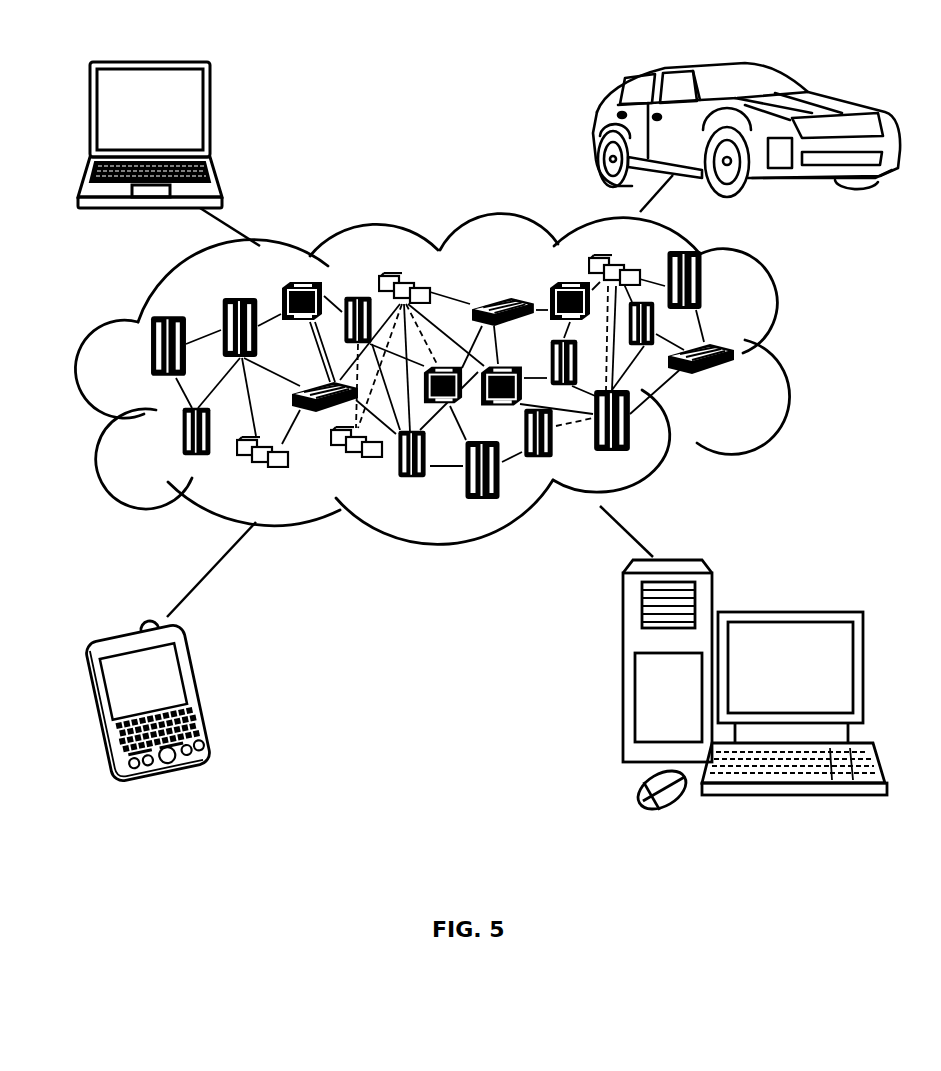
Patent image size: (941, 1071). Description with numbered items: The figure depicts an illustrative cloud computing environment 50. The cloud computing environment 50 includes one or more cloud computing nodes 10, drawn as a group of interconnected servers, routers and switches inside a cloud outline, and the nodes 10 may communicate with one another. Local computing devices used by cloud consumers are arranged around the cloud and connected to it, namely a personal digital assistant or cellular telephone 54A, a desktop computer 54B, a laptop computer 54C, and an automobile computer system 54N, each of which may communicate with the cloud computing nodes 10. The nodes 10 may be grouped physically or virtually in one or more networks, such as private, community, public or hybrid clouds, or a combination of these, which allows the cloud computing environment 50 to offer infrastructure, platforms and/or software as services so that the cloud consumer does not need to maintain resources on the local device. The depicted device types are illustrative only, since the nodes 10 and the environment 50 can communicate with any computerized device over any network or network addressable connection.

The cloud computing nodes 10 is at (744, 386).
The cloud computing environment 50 is at (796, 357).
The personal digital assistant (PDA) or cellular telephone 54A is at (202, 693).
The desktop computer 54B is at (790, 612).
The laptop computer 54C is at (212, 117).
The automobile computer system 54N is at (597, 130).